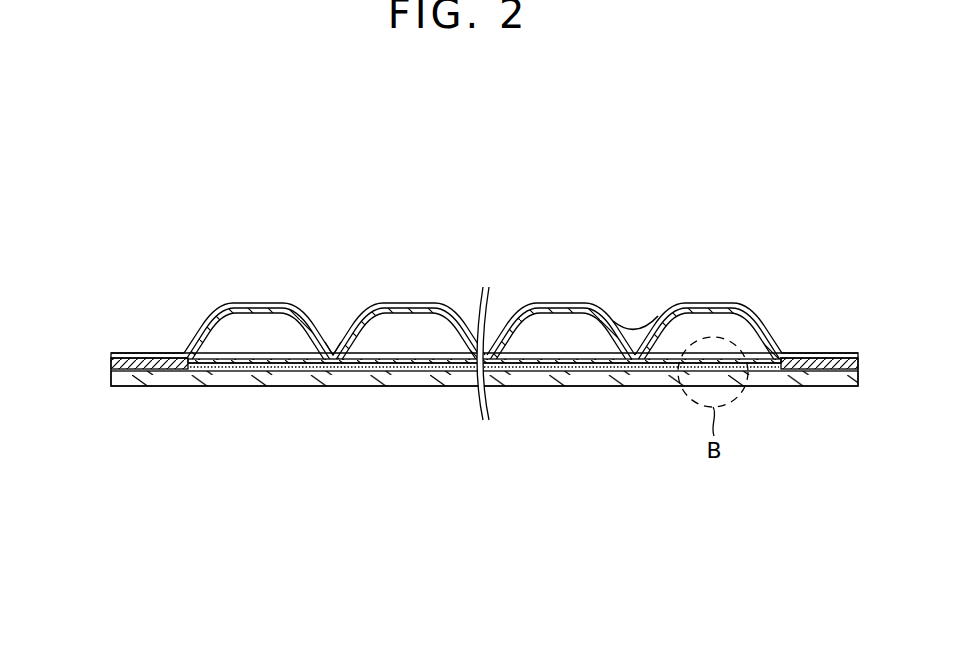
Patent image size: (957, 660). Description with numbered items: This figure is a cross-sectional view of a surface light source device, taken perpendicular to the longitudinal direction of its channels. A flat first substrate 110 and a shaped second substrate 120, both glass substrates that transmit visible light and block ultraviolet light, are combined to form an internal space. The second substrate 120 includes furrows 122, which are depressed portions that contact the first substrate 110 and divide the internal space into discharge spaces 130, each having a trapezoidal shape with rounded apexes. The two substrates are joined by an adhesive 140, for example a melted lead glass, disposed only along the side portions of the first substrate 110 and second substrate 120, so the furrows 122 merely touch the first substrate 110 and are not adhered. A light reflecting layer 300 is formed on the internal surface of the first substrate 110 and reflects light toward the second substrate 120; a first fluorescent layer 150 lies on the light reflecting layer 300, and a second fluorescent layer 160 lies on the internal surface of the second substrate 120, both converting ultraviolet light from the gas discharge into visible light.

The first substrate 110 is at (403, 380).
The second substrate 120 is at (200, 322).
The furrows 122 is at (333, 350).
The discharge spaces 130 is at (222, 346).
The adhesive 140 is at (112, 363).
The first fluorescent layer 150 is at (307, 368).
The second fluorescent layer 160 is at (267, 312).
The light reflecting layer 300 is at (238, 368).